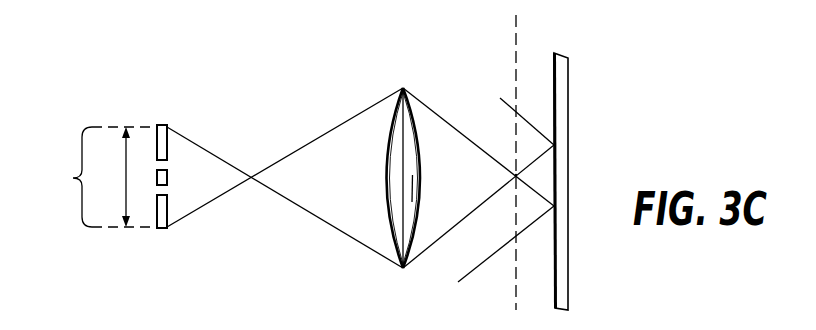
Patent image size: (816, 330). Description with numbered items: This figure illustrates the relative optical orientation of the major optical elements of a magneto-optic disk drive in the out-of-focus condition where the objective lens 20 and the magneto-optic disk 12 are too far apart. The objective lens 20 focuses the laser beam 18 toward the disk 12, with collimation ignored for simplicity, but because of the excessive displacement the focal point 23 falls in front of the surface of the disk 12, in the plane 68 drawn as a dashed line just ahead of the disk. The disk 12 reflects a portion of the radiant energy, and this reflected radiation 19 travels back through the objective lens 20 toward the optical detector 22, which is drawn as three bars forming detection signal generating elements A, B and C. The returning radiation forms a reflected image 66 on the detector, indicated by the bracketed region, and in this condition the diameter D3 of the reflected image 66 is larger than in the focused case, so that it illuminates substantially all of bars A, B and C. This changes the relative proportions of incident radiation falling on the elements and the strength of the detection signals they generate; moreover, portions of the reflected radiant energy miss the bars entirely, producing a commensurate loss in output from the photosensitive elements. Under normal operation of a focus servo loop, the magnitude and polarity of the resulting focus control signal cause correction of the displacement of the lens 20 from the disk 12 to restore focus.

The magneto-optic disk 12 is at (562, 102).
The laser beam 18 is at (448, 120).
The reflected radiation 19 is at (327, 130).
The objective lens 20 is at (392, 118).
The optical detector 22 is at (160, 106).
The focal point 23 is at (515, 175).
The reflected image 66 is at (73, 178).
The plane 68 is at (518, 42).
The detection signal generating element A is at (167, 177).
The detection signal generating element B is at (163, 145).
The detection signal generating element C is at (167, 207).
The diameter of reflected image D3 is at (122, 177).